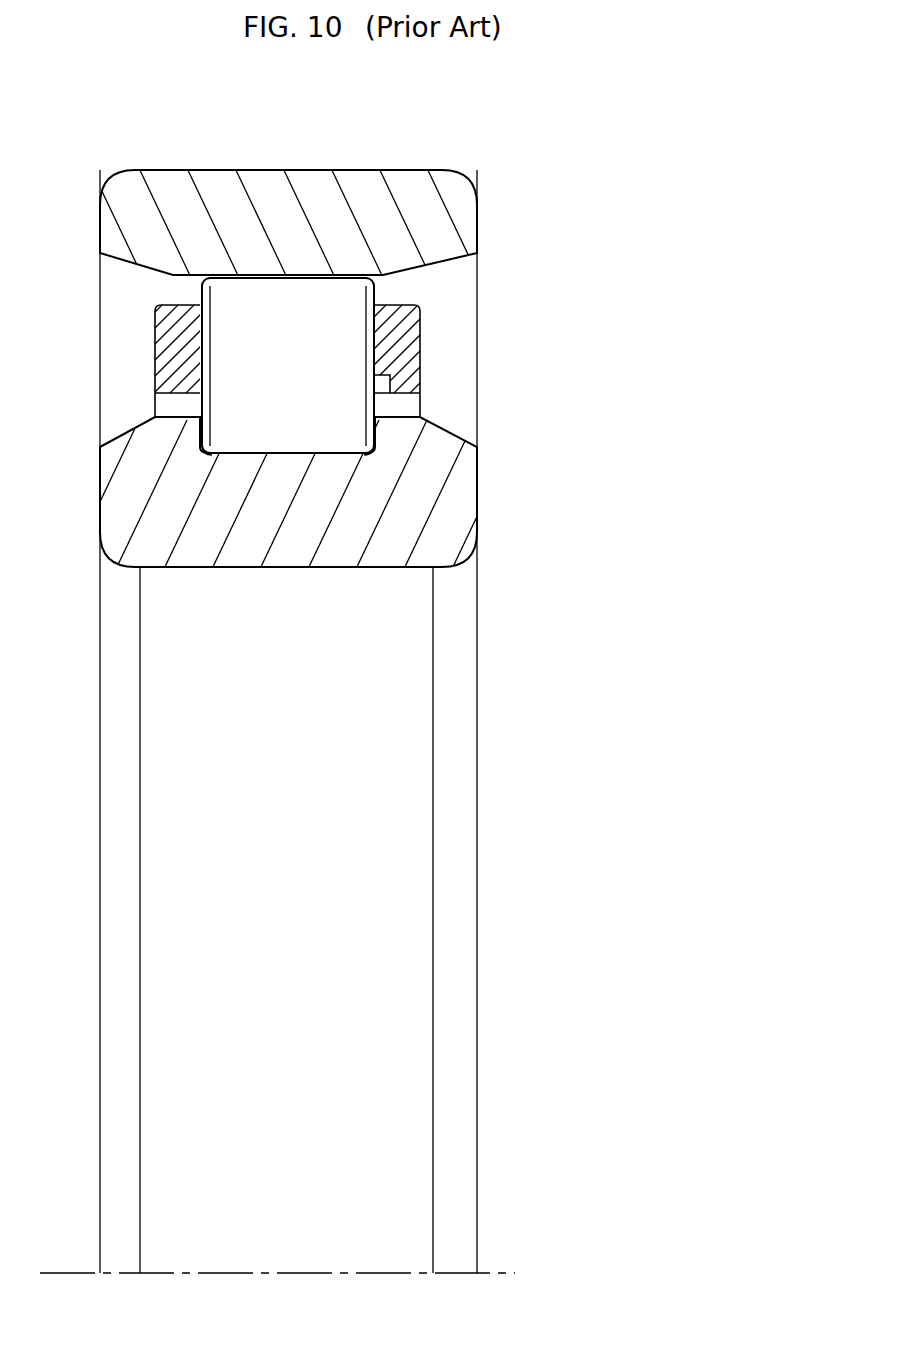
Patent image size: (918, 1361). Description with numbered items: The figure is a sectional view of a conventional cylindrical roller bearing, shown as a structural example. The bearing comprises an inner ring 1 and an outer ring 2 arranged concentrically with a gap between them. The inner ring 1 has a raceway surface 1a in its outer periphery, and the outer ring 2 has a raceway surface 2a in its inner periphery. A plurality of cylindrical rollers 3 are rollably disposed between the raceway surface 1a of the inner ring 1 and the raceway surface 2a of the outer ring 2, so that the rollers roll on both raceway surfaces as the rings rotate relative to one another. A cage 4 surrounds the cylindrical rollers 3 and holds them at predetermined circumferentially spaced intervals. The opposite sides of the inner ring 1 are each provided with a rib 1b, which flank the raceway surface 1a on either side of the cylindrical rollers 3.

The inner ring 1 is at (462, 489).
The raceway surface 1a is at (293, 443).
The rib 1b is at (190, 427).
The outer ring 2 is at (465, 232).
The raceway surface 2a is at (285, 284).
The cylindrical rollers 3 is at (243, 348).
The cage 4 is at (412, 343).